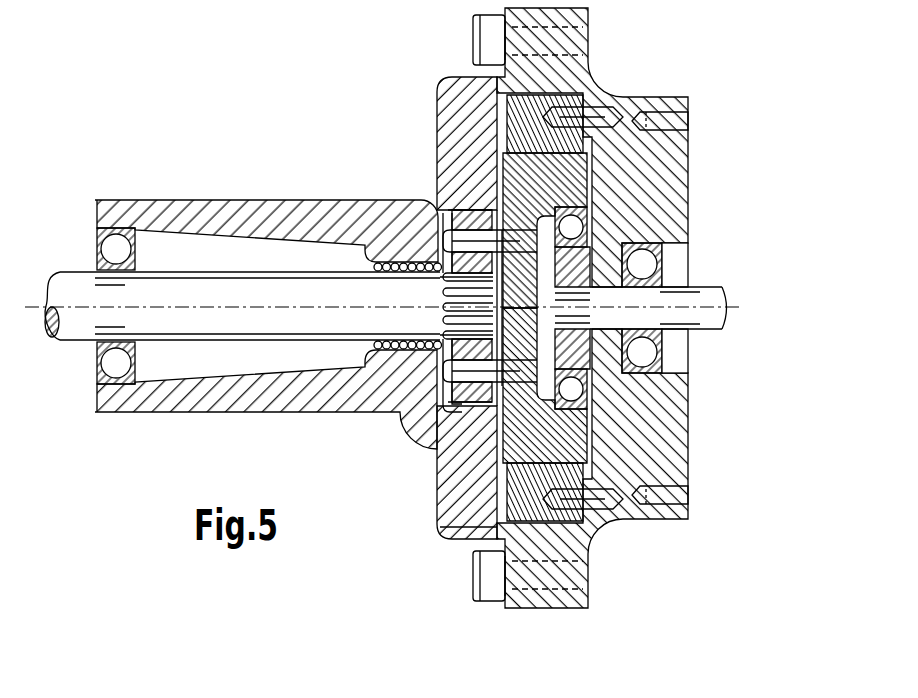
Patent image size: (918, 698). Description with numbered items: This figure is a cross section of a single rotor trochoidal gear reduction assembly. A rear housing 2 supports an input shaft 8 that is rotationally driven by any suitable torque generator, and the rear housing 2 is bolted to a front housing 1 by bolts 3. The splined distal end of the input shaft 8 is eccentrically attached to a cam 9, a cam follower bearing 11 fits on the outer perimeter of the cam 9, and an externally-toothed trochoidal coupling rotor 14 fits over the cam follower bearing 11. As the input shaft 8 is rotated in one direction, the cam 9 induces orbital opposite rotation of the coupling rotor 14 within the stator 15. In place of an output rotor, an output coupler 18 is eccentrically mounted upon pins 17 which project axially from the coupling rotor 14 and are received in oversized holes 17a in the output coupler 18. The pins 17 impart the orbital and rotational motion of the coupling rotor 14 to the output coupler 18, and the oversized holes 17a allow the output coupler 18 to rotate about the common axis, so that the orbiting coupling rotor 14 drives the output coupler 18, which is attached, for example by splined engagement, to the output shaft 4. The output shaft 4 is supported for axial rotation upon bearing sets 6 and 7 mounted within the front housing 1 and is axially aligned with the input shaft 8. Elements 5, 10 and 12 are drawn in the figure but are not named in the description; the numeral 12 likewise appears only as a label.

The front housing 1 is at (307, 218).
The rear housing 2 is at (665, 165).
The bolts 3 is at (490, 37).
The output shaft 4 is at (85, 290).
The pin 5 is at (560, 233).
The bearing set 6 is at (117, 248).
The bearing set 7 is at (400, 348).
The input shaft 8 is at (700, 292).
The cam 9 is at (590, 262).
The ball bearing 10 is at (645, 352).
The cam follower bearing 11 is at (580, 382).
The locking pin 12 is at (590, 117).
The coupling rotor 14 is at (527, 187).
The stator 15 is at (533, 133).
The pins 17 is at (441, 228).
The oversized holes 17a is at (446, 413).
The output coupler 18 is at (470, 240).